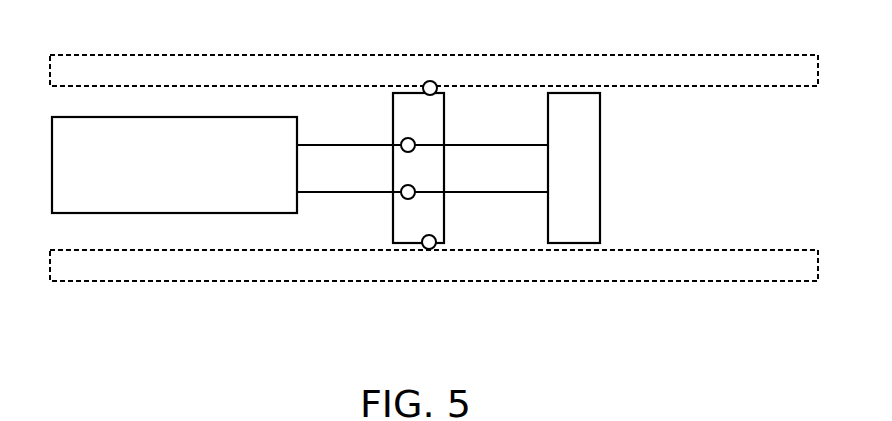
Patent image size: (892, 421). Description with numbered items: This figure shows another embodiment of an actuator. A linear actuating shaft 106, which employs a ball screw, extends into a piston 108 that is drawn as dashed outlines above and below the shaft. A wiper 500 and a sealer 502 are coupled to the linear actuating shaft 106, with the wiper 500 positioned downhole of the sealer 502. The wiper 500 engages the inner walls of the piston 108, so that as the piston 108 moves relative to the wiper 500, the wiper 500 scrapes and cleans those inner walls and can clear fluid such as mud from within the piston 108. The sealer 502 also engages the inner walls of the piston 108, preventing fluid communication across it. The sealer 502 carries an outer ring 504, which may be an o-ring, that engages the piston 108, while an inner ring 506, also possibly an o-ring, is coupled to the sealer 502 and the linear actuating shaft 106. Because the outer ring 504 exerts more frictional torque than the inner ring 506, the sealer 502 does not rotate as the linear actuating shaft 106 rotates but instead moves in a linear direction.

The linear actuating shaft 106 is at (154, 123).
The piston 108 is at (726, 70).
The wiper 500 is at (575, 95).
The sealer 502 is at (398, 237).
The outer ring 504 is at (431, 81).
The inner ring 506 is at (401, 190).